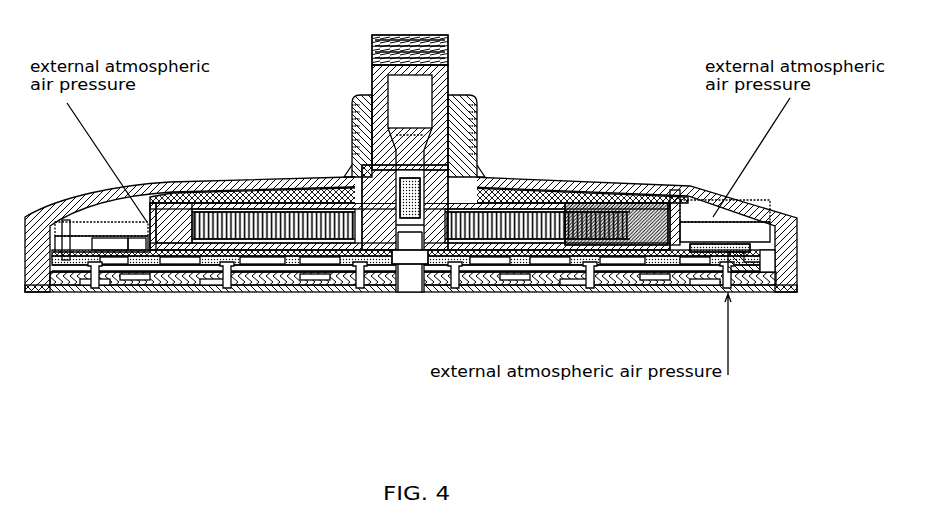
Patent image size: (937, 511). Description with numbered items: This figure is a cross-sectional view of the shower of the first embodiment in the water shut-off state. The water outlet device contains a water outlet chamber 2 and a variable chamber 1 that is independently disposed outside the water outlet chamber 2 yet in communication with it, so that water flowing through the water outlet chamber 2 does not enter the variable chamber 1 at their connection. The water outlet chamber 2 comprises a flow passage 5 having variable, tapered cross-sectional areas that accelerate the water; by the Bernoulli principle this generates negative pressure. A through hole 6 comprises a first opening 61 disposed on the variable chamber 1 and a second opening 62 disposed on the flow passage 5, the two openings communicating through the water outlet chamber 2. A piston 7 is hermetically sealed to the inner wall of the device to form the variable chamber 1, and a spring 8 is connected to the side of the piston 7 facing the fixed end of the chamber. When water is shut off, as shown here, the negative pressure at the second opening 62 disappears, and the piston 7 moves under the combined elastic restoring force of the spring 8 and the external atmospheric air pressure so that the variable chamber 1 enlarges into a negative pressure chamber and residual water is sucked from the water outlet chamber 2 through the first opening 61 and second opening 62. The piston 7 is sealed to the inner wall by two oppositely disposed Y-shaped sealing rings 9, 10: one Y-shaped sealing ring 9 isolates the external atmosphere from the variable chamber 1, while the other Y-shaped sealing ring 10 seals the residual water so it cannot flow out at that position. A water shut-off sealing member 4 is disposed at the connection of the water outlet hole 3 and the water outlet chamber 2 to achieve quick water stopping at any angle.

The variable chamber 1 is at (333, 202).
The water outlet chamber 2 is at (452, 205).
The water outlet hole 3 is at (730, 285).
The water shut-off sealing member 4 is at (747, 245).
The flow passage having variable cross-sectional areas 5 is at (415, 207).
The through hole 6 is at (313, 63).
The first opening 61 is at (415, 165).
The second opening 62 is at (357, 133).
The piston 7 is at (680, 188).
The spring 8 is at (595, 185).
The Y-shaped sealing ring 9 is at (237, 182).
The Y-shaped sealing ring 10 is at (254, 186).